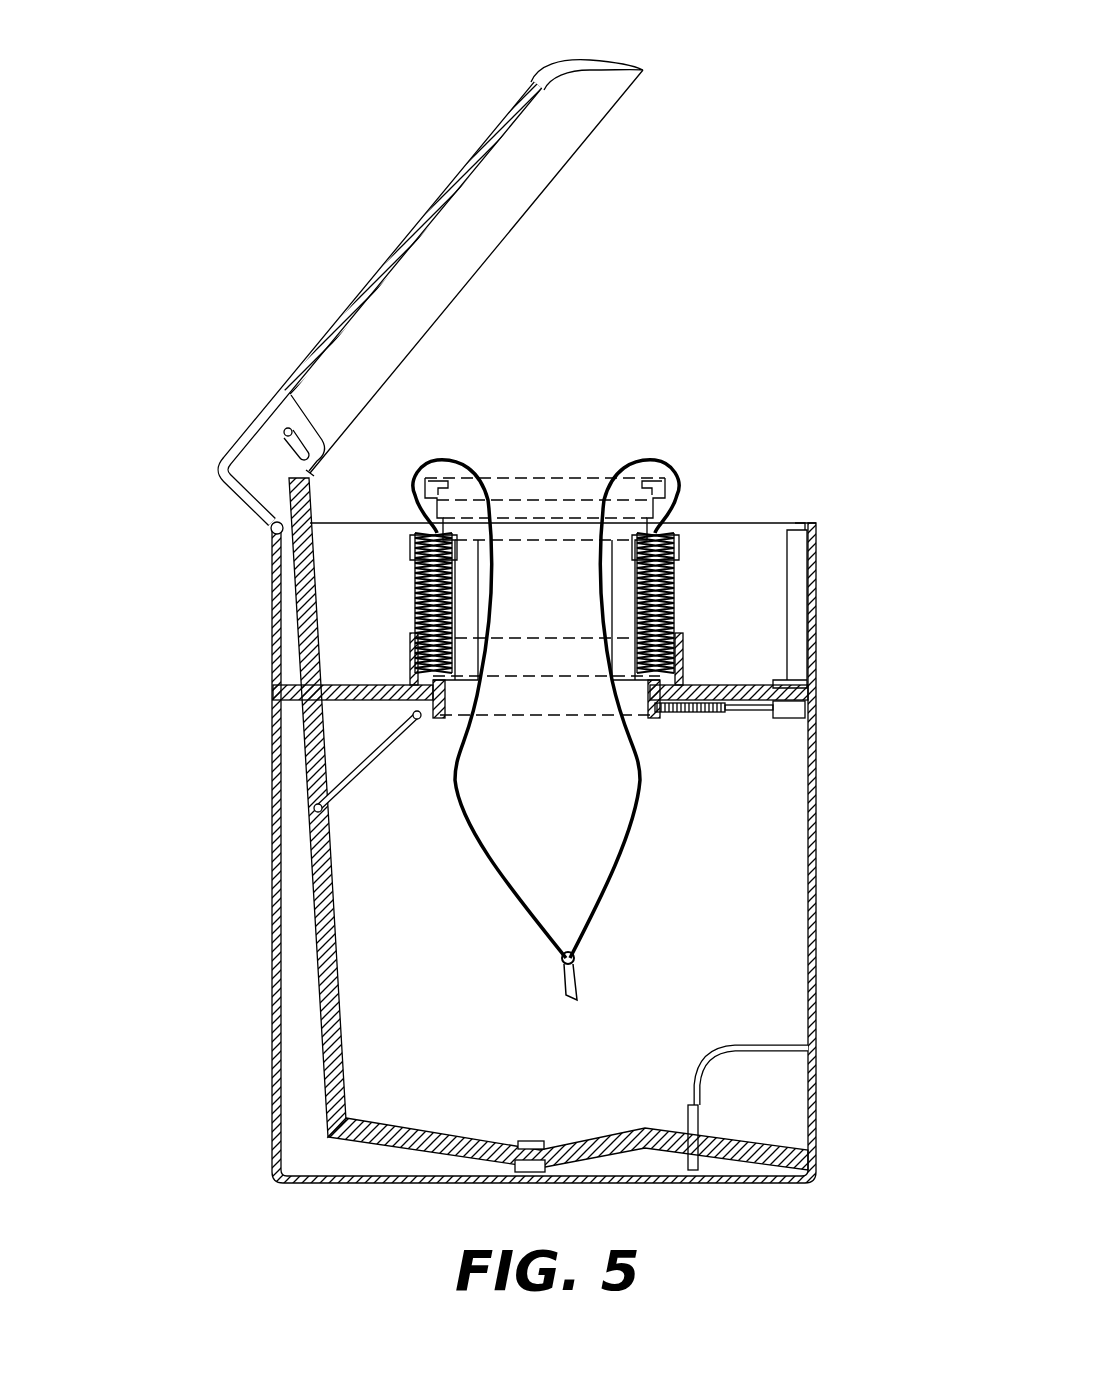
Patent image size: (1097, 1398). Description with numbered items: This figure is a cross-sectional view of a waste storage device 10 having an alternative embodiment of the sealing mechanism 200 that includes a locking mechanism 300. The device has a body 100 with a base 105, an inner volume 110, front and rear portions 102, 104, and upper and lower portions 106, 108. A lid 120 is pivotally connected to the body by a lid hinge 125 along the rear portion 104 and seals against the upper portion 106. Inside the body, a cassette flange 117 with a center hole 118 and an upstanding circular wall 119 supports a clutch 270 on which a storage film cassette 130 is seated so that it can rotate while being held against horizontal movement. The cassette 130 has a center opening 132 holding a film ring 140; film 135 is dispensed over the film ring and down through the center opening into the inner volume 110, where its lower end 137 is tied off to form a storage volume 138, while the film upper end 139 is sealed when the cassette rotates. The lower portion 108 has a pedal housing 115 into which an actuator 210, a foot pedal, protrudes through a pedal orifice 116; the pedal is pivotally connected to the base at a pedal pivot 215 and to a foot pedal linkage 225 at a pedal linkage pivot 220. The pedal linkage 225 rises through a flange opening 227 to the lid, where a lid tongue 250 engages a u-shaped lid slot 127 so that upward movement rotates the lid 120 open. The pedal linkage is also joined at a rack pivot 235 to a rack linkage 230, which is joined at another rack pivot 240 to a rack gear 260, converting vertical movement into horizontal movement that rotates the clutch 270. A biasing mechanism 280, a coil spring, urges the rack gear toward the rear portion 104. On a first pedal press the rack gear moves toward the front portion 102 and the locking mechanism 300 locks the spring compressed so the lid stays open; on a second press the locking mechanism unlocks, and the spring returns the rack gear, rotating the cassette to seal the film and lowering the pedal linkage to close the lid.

The waste storage device 10 is at (130, 292).
The body 100 is at (815, 905).
The front portion 102 is at (840, 832).
The rear portion 104 is at (250, 910).
The base 105 is at (305, 1180).
The upper portion 106 is at (245, 612).
The lower portion 108 is at (250, 1135).
The inner volume 110 is at (680, 1000).
The pedal housing 115 is at (790, 1075).
The pedal orifice 116 is at (705, 1125).
The cassette flange 117 is at (345, 688).
The center hole 118 is at (652, 767).
The circular wall 119 is at (410, 638).
The lid 120 is at (582, 75).
The lid hinge 125 is at (270, 537).
The lid slot 127 is at (283, 440).
The storage film cassette 130 is at (690, 548).
The center opening 132 is at (552, 548).
The film 135 is at (600, 570).
The lower end 137 is at (562, 968).
The storage volume 138 is at (547, 863).
The film upper end 139 is at (438, 458).
The film ring 140 is at (512, 488).
The sealing mechanism 200 is at (308, 945).
The actuator 210 is at (795, 1150).
The pedal pivot 215 is at (495, 1172).
The pedal linkage pivot 220 is at (345, 1140).
The foot pedal linkage 225 is at (330, 1025).
The flange opening 227 is at (290, 688).
The rack linkage 230 is at (372, 770).
The rack pivot 235 is at (314, 808).
The rack pivot 240 is at (412, 716).
The lid tongue 250 is at (287, 393).
The rack gear 260 is at (672, 712).
The clutch 270 is at (655, 725).
The biasing mechanism 280 is at (728, 712).
The locking mechanism 300 is at (815, 703).